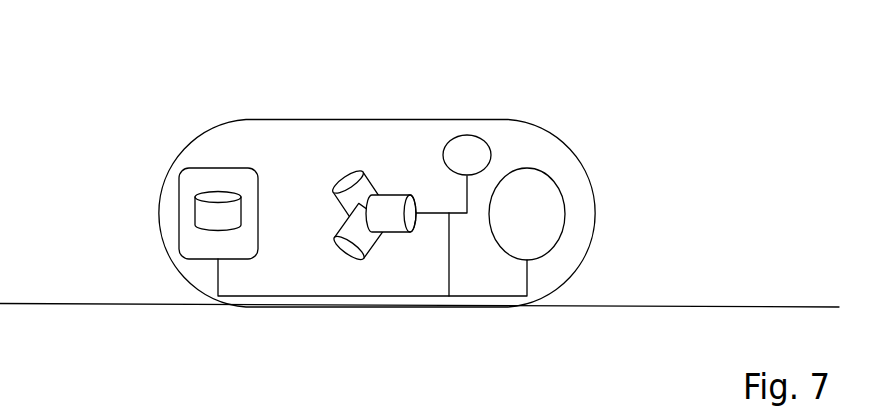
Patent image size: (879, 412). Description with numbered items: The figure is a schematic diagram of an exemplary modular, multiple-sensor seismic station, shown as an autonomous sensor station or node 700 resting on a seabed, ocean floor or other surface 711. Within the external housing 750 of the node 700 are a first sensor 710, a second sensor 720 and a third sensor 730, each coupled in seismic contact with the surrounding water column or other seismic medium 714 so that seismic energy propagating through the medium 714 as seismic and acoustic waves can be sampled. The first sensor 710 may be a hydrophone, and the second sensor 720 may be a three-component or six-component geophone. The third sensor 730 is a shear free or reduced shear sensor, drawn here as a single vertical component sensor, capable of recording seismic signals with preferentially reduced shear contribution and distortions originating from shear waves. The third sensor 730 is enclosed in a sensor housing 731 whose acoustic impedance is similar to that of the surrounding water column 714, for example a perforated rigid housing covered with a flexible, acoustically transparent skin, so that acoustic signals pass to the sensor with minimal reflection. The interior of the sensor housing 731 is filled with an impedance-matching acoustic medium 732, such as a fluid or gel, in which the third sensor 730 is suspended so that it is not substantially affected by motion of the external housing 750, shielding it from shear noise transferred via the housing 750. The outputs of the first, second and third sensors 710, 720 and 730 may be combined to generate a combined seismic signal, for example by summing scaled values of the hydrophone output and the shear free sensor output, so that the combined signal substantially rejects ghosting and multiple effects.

The autonomous sensor station or node 700 is at (656, 81).
The first sensor 710 is at (565, 197).
The surface 711 is at (80, 357).
The seismic medium 714 is at (78, 54).
The second sensor 720 is at (403, 160).
The third sensor 730 is at (192, 160).
The sensor housing 731 is at (179, 177).
The acoustic medium 732 is at (197, 236).
The external housing 750 is at (513, 120).